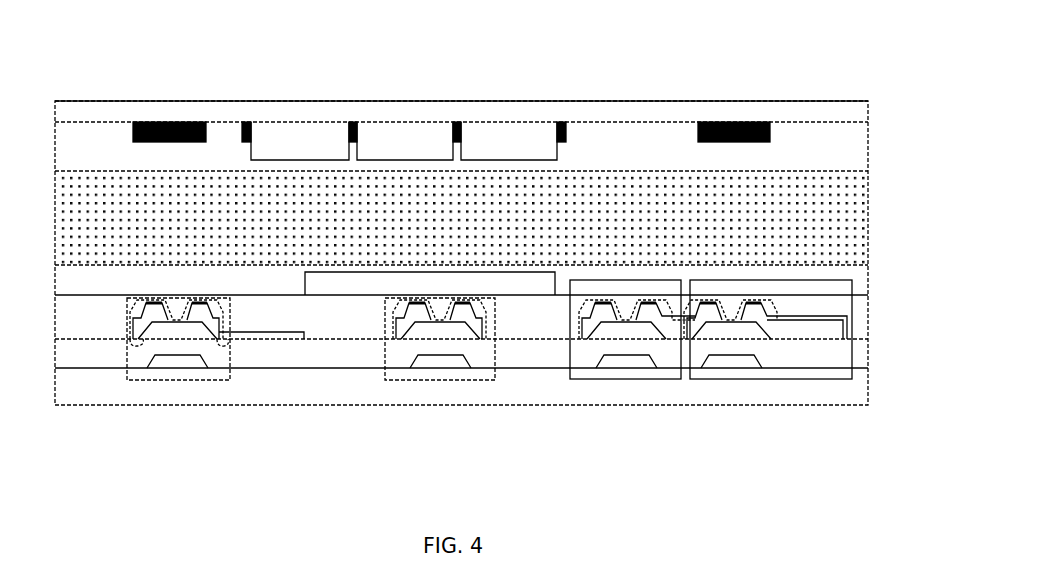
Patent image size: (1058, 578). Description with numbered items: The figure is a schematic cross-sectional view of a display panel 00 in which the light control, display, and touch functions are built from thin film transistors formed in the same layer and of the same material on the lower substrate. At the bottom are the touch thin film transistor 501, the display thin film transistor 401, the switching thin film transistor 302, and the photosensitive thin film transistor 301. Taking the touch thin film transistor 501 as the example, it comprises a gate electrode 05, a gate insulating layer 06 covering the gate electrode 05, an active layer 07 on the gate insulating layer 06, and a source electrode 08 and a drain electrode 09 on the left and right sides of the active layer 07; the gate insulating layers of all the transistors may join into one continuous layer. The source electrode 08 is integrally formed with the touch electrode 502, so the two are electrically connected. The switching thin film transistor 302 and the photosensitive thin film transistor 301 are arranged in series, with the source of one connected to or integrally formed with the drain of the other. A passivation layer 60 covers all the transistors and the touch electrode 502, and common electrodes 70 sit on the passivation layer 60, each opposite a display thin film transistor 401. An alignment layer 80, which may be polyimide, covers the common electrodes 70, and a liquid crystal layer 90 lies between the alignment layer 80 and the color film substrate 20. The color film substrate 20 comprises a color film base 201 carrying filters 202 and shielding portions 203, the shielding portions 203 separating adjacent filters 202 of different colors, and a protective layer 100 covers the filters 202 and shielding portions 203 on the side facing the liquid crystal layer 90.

The display panel 00 is at (117, 72).
The color film substrate 20 is at (508, 121).
The color film base 201 is at (860, 112).
The filters 202 is at (530, 142).
The shielding portions 203 is at (770, 138).
The protective layer 100 is at (853, 160).
The liquid crystal layer 90 is at (862, 214).
The alignment layer 80 is at (862, 275).
The common electrodes 70 is at (368, 287).
The passivation layer 60 is at (525, 323).
The touch thin film transistor 501 is at (180, 372).
The drain electrode 09 is at (170, 323).
The active layer 07 is at (167, 332).
The gate electrode 05 is at (162, 362).
The gate insulating layer 06 is at (213, 358).
The source electrode 08 is at (215, 342).
The touch electrode 502 is at (240, 335).
The display thin film transistor 401 is at (452, 380).
The switching thin film transistor 302 is at (640, 379).
The photosensitive thin film transistor 301 is at (780, 379).